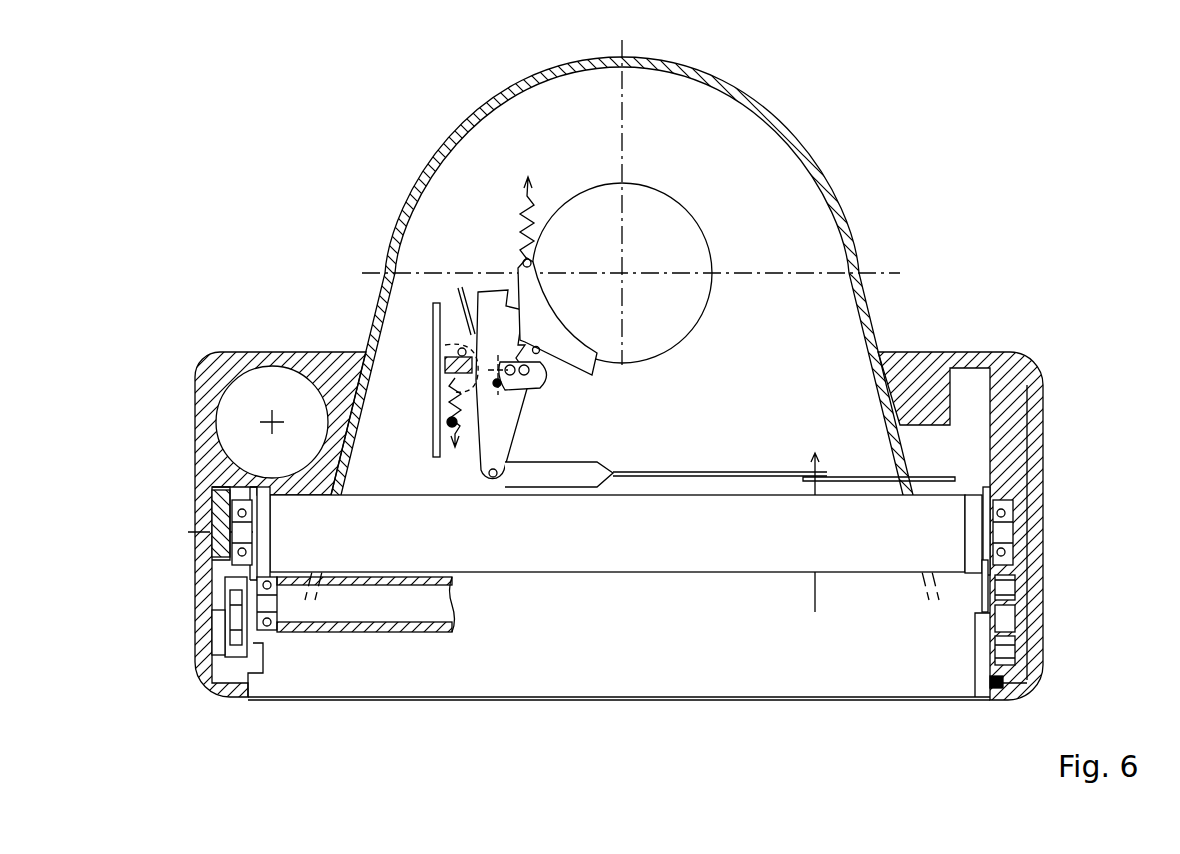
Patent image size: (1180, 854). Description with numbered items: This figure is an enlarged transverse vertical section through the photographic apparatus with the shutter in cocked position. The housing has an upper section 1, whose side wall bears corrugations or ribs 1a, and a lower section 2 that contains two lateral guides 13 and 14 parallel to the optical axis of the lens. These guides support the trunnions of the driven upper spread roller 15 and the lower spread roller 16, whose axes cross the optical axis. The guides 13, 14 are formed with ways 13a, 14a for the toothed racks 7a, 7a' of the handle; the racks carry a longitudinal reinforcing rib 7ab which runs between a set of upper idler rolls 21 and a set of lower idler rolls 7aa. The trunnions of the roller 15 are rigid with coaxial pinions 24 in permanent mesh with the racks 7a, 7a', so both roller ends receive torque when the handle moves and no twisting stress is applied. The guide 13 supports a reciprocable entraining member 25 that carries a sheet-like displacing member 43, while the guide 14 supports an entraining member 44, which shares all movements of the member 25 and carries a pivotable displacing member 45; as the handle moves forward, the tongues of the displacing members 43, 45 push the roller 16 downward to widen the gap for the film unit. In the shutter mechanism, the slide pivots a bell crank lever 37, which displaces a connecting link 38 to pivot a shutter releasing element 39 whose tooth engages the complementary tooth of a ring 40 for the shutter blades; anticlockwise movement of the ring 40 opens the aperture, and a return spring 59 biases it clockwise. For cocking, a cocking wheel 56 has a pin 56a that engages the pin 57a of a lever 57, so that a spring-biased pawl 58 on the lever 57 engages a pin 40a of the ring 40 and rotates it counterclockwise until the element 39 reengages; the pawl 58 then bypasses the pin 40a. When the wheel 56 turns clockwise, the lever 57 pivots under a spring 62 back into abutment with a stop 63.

The upper section 1 is at (1005, 370).
The corrugations or ribs 1a is at (790, 128).
The lower section 2 is at (1020, 680).
The toothed rack 7a is at (1061, 609).
The toothed rack 7a' is at (159, 617).
The lower idler rolls 7aa is at (1022, 598).
The reinforcing rib 7ab is at (212, 633).
The lateral guide 13 is at (1035, 405).
The way 13a is at (1022, 582).
The lateral guide 14 is at (222, 503).
The way 14a is at (210, 567).
The driven upper spread roller 15 is at (617, 566).
The lower spread roller 16 is at (365, 633).
The upper idler rolls 21 is at (225, 588).
The pinions 24 is at (232, 508).
The entraining member 25 is at (985, 490).
The bell crank lever 37 is at (853, 476).
The connecting link 38 is at (695, 470).
The shutter releasing element 39 is at (495, 430).
The ring 40 is at (582, 365).
The pin 40a is at (540, 347).
The displacing member 43 is at (983, 596).
The entraining member 44 is at (212, 492).
The displacing member 45 is at (278, 600).
The cocking wheel 56 is at (433, 318).
The pin 56a is at (447, 368).
The lever 57 is at (462, 298).
The pin 57a is at (458, 351).
The spring-biased pawl 58 is at (532, 372).
The return spring 59 is at (520, 195).
The spring 62 is at (455, 422).
The stop 63 is at (447, 424).